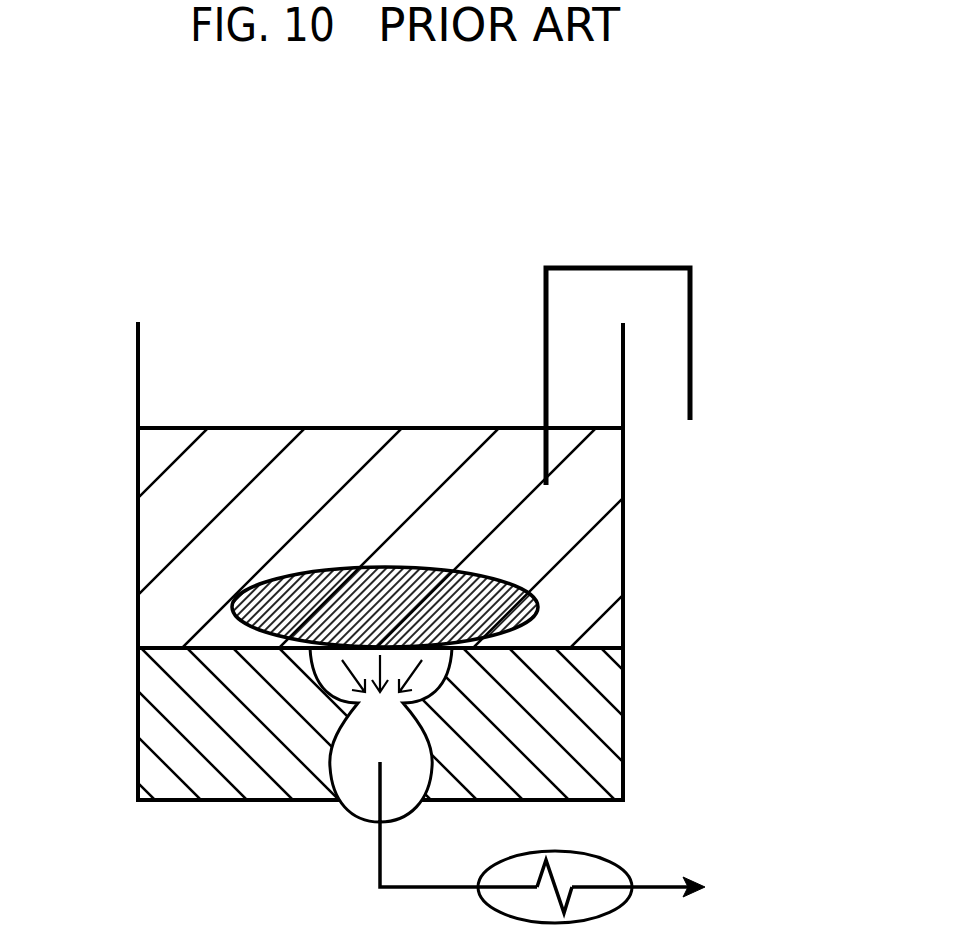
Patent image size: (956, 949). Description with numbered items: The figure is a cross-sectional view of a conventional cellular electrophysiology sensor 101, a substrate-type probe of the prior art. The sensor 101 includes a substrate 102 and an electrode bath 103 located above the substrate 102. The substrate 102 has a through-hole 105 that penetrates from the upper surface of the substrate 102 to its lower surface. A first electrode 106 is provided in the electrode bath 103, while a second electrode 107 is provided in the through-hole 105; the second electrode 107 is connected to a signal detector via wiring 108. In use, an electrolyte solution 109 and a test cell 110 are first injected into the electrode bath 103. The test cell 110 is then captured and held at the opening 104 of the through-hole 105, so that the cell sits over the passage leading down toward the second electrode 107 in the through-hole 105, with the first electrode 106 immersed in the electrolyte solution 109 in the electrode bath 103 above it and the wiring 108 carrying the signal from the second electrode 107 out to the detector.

The cellular electrophysiology sensor 101 is at (452, 275).
The substrate 102 is at (160, 733).
The electrode bath 103 is at (625, 542).
The opening 104 is at (328, 668).
The through-hole 105 is at (405, 752).
The first electrode 106 is at (548, 463).
The second electrode 107 is at (378, 792).
The wiring 108 is at (377, 873).
The electrolyte solution 109 is at (243, 447).
The test cell 110 is at (510, 607).